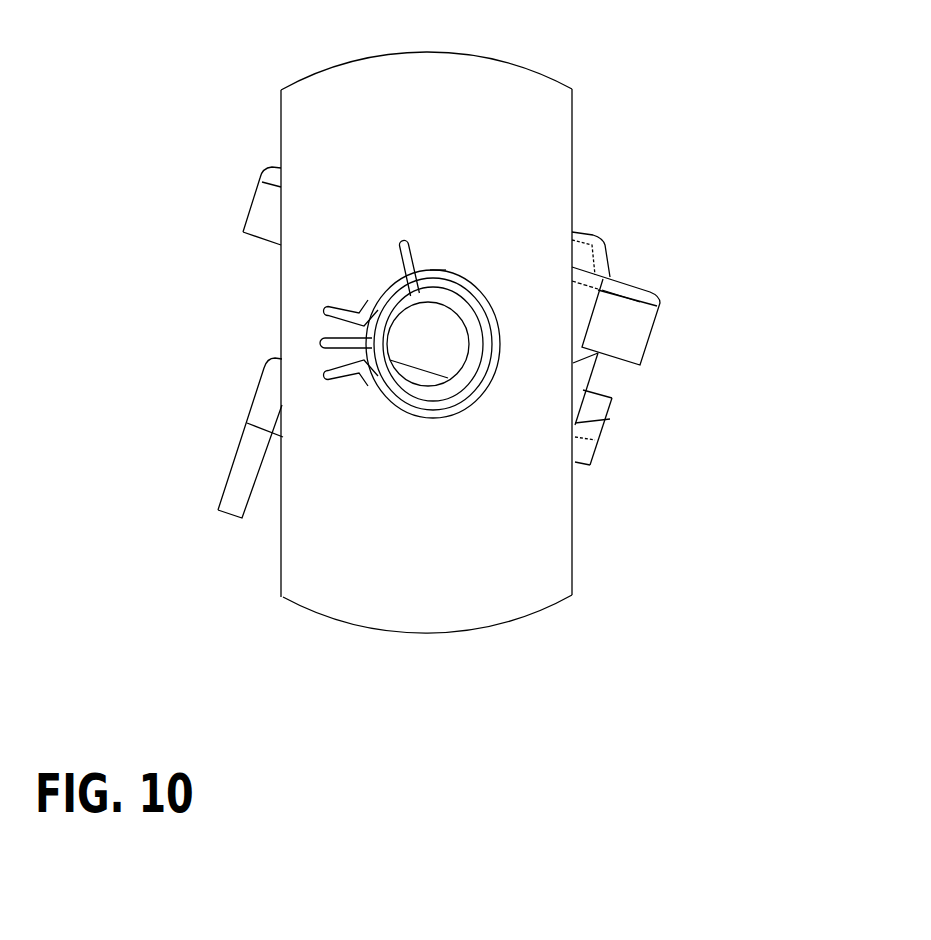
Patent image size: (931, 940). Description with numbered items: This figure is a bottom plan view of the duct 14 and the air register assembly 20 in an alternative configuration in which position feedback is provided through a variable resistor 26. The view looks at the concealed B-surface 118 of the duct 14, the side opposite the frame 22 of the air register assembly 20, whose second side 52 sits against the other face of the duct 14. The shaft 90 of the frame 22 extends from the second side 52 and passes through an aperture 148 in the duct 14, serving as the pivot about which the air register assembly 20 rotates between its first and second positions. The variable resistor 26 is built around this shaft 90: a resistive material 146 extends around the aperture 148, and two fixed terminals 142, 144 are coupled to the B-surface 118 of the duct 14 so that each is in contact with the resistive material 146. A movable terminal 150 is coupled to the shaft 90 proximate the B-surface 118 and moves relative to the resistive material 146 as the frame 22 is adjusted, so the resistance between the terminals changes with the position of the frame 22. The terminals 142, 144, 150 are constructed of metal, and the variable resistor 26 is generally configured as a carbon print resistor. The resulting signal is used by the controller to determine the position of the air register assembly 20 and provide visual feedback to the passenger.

The duct 14 is at (488, 582).
The air register assembly 20 is at (677, 75).
The frame 22 is at (667, 298).
The variable resistor 26 is at (468, 277).
The second side 52 is at (618, 325).
The shaft 90 is at (445, 353).
The B-surface 118 is at (405, 582).
The fixed terminal 142 is at (324, 311).
The fixed terminal 144 is at (324, 377).
The resistive material 146 is at (437, 273).
The aperture 148 is at (457, 312).
The movable terminal 150 is at (400, 247).